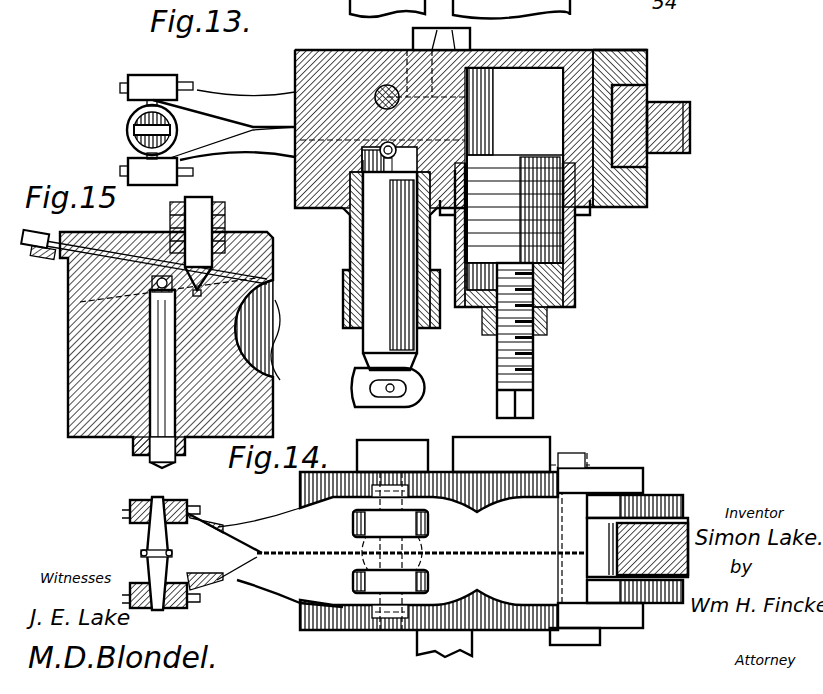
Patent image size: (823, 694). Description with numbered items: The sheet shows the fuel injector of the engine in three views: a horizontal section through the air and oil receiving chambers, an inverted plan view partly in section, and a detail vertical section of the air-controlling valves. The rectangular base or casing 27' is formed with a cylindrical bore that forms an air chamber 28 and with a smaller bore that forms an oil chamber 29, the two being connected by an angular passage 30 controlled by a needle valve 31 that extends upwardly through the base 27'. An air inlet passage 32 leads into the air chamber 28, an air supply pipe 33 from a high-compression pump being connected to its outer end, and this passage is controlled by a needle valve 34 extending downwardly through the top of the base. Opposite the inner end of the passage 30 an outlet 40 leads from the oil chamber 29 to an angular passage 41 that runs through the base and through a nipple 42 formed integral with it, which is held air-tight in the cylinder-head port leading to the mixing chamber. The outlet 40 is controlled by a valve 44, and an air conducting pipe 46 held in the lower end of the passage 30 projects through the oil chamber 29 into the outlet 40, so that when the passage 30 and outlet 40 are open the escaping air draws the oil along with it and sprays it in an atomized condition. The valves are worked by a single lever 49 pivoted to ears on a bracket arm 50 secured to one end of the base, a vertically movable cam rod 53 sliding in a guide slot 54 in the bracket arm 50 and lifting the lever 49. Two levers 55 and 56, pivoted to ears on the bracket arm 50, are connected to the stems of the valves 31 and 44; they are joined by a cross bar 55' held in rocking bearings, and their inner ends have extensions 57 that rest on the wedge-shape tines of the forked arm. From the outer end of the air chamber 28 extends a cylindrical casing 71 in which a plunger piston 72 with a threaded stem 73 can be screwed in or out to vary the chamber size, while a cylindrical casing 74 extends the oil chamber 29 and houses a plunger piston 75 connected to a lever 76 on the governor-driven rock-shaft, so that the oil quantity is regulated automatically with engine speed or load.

In FIG. 13, the base or casing 27' is at (471, 116).
In FIG. 15, the base or casing 27' is at (156, 343).
In FIG. 14, the base or casing 27' is at (424, 567).
In FIG. 13, the air chamber 28 is at (515, 165).
In FIG. 15, the air chamber 28 is at (273, 332).
In FIG. 13, the oil chamber 29 is at (345, 212).
In FIG. 13, the angular passage 30 is at (385, 81).
In FIG. 15, the angular passage 30 is at (143, 299).
In FIG. 13, the needle valve 31 is at (380, 88).
In FIG. 15, the needle valve 31 is at (157, 355).
In FIG. 14, the needle valve 31 is at (355, 578).
In FIG. 15, the air inlet passage 32 is at (136, 250).
In FIG. 15, the air supply pipe 33 is at (27, 252).
In FIG. 15, the needle valve 34 is at (199, 207).
In FIG. 13, the outlet 40 is at (363, 160).
In FIG. 13, the angular passage 41 is at (465, 140).
In FIG. 14, the nipple 42 is at (450, 660).
In FIG. 14, the valve 44 is at (355, 522).
In FIG. 13, the air conducting pipe 46 is at (378, 150).
In FIG. 13, the lever 49 is at (126, 118).
In FIG. 13, the bracket arm 50 is at (650, 55).
In FIG. 14, the bracket arm 50 is at (628, 478).
In FIG. 13, the cam rod 53 is at (690, 125).
In FIG. 14, the cam rod 53 is at (690, 522).
In FIG. 13, the guide slot 54 is at (650, 88).
In FIG. 13, the lever 55 is at (224, 100).
In FIG. 14, the lever 55 is at (331, 582).
In FIG. 14, the cross bar 55' is at (141, 553).
In FIG. 13, the lever 56 is at (227, 148).
In FIG. 14, the lever 56 is at (333, 525).
In FIG. 14, the extensions 57 is at (652, 500).
In FIG. 13, the cylindrical casing 71 is at (580, 250).
In FIG. 14, the cylindrical casing 71 is at (501, 454).
In FIG. 13, the plunger piston 72 is at (582, 218).
In FIG. 13, the threaded stem 73 is at (533, 350).
In FIG. 13, the cylindrical casing 74 is at (352, 243).
In FIG. 14, the cylindrical casing 74 is at (392, 456).
In FIG. 13, the plunger piston 75 is at (390, 271).
In FIG. 13, the lever 76 is at (418, 390).